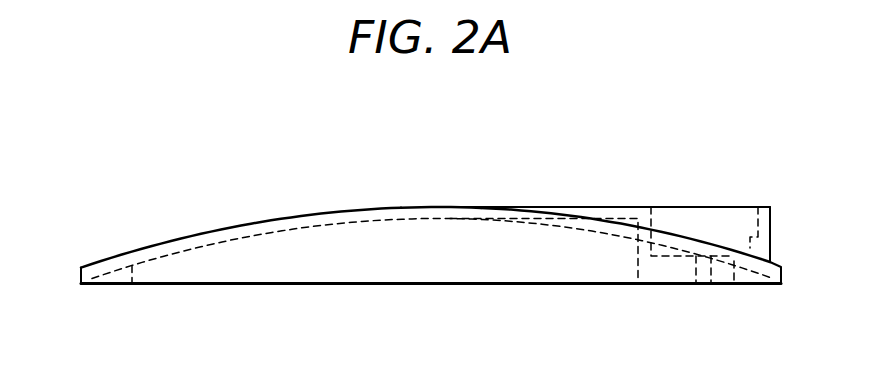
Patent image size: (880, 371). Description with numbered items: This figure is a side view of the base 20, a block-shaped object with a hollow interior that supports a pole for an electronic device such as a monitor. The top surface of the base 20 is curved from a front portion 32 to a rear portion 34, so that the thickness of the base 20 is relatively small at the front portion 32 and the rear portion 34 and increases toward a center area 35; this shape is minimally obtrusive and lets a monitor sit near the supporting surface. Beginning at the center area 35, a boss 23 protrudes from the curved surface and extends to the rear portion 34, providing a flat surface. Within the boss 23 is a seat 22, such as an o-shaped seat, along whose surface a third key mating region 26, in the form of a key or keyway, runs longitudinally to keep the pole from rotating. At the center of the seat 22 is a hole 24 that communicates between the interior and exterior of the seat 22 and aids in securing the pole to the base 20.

The base 20 is at (221, 229).
The center area 35 is at (427, 207).
The front portion 32 is at (80, 280).
The seat 22 is at (720, 215).
The boss 23 is at (630, 217).
The rear portion 34 is at (771, 207).
The third key mating region 26 is at (757, 248).
The hole 24 is at (703, 290).